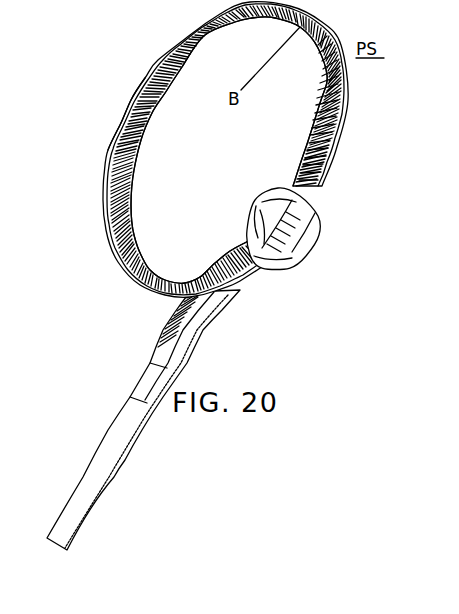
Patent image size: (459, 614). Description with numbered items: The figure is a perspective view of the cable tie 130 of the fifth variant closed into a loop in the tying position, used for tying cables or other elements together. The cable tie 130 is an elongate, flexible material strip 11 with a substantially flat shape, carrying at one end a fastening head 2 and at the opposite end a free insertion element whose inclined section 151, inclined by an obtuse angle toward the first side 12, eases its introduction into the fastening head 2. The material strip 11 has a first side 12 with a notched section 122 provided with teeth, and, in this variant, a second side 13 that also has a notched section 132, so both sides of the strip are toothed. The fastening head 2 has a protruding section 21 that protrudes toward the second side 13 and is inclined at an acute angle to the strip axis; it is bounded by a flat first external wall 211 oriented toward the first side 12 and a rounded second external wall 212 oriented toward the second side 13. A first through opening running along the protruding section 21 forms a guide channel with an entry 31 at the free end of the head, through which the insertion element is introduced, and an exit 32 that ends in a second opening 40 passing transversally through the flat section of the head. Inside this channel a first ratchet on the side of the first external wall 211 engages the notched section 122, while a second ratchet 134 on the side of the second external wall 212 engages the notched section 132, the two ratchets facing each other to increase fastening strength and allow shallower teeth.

The fastening head 2 is at (295, 250).
The material strip 11 is at (349, 108).
The first side 12 is at (170, 58).
The second side 13 is at (333, 153).
The protruding section 21 is at (303, 235).
The entry 31 is at (308, 202).
The exit 32 is at (270, 262).
The second opening 40 is at (291, 272).
The notched section 122 is at (112, 148).
The cable tie 130 is at (116, 106).
The notched section 132 is at (314, 125).
The second ratchet 134 is at (264, 196).
The inclined section 151 is at (110, 458).
The first external wall 211 is at (302, 248).
The second external wall 212 is at (262, 200).